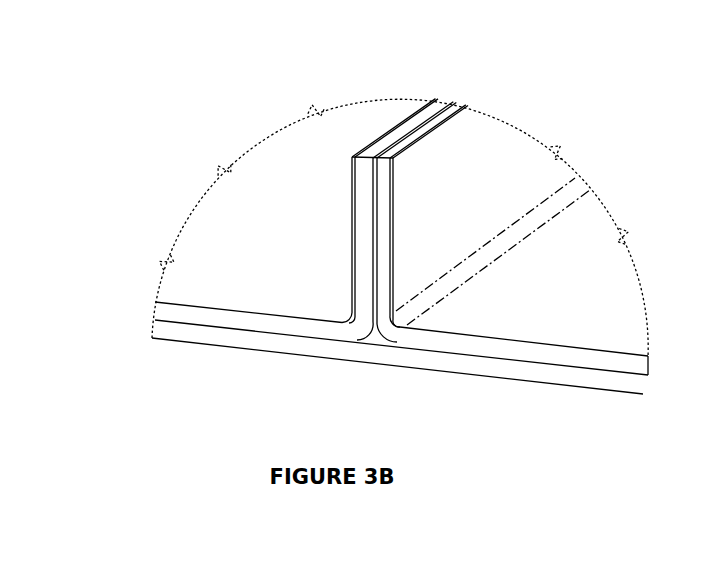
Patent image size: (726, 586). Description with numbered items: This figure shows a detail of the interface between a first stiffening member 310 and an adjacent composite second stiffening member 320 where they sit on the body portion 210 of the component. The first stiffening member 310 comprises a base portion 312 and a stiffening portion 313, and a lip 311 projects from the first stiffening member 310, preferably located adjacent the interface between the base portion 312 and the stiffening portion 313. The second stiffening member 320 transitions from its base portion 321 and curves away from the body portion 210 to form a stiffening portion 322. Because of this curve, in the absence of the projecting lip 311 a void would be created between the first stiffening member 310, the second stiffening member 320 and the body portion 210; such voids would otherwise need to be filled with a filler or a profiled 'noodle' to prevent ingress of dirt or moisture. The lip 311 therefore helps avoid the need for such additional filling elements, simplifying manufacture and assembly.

The body portion 210 is at (217, 338).
The first stiffening member 310 is at (538, 195).
The lip 311 is at (377, 335).
The base portion 312 is at (553, 298).
The stiffening portion 313 is at (456, 210).
The second stiffening member 320 is at (217, 238).
The base portion 321 is at (267, 238).
The stiffening portion 322 is at (360, 247).